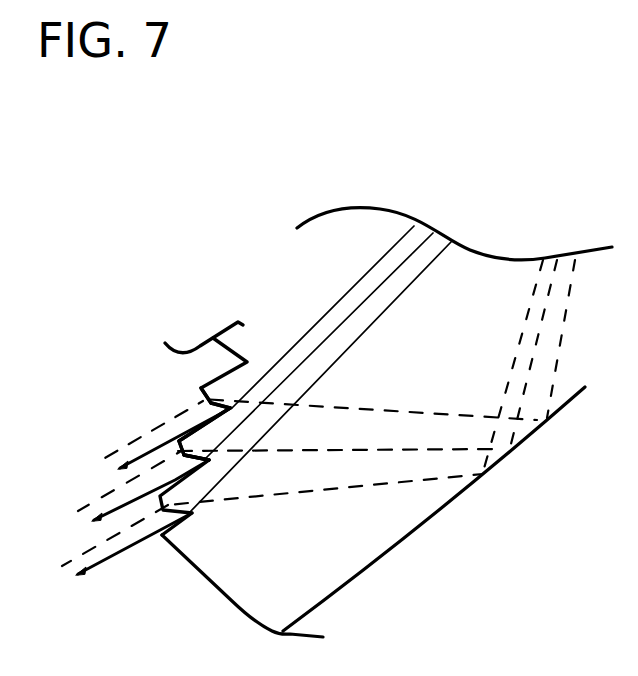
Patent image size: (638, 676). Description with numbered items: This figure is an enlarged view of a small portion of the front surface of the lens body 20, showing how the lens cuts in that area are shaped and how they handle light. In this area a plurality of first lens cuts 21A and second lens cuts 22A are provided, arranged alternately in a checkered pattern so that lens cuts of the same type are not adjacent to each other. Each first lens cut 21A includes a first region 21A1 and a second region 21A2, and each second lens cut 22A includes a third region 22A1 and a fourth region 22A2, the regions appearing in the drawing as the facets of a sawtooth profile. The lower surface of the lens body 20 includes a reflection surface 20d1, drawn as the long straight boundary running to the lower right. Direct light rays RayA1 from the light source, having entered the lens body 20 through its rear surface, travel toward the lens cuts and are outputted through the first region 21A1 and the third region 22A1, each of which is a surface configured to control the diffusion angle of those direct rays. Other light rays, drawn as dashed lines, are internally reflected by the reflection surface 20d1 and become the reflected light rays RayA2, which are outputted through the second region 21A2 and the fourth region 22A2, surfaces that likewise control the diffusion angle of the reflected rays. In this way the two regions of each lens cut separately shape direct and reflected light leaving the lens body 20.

The lens body 20 is at (573, 393).
The reflection surface 20d1 is at (405, 537).
The first lens cut 21A is at (186, 384).
The second lens cut 22A is at (212, 341).
The first region 21A1 is at (229, 408).
The third region 22A1 is at (206, 460).
The second region 21A2 is at (200, 397).
The fourth region 22A2 is at (183, 451).
The direct light rays RayA1 is at (330, 311).
The reflected light rays RayA2 is at (390, 408).